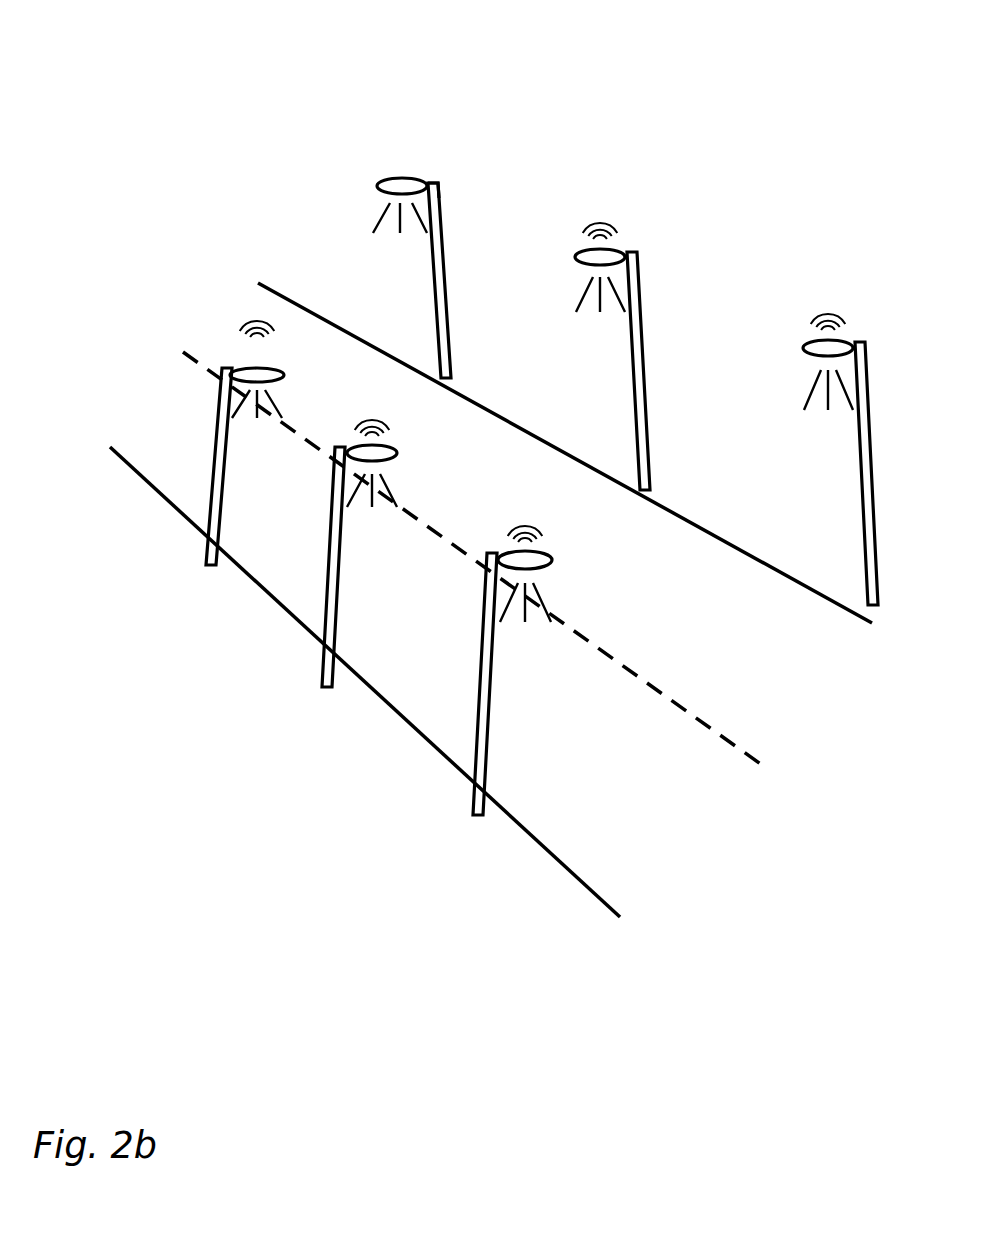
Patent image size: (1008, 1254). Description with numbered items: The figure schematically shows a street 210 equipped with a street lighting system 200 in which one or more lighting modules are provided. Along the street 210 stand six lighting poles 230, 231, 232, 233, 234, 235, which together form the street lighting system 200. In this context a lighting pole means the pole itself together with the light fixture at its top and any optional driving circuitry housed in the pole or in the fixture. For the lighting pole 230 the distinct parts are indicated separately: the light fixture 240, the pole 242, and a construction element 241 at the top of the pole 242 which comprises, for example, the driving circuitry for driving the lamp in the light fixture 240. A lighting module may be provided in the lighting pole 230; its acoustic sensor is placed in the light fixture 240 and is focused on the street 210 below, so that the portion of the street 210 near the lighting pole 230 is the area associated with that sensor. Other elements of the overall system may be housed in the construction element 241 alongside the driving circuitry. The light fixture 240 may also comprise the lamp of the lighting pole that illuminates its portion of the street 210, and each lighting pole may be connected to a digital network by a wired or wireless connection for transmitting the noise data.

The street lighting system 200 is at (208, 80).
The street 210 is at (223, 313).
The lighting pole 230 is at (437, 233).
The lighting pole 231 is at (637, 212).
The lighting pole 232 is at (858, 278).
The lighting pole 233 is at (208, 582).
The lighting pole 234 is at (321, 703).
The lighting pole 235 is at (472, 836).
The light fixture 240 is at (401, 178).
The construction element 241 is at (438, 187).
The pole 242 is at (437, 235).